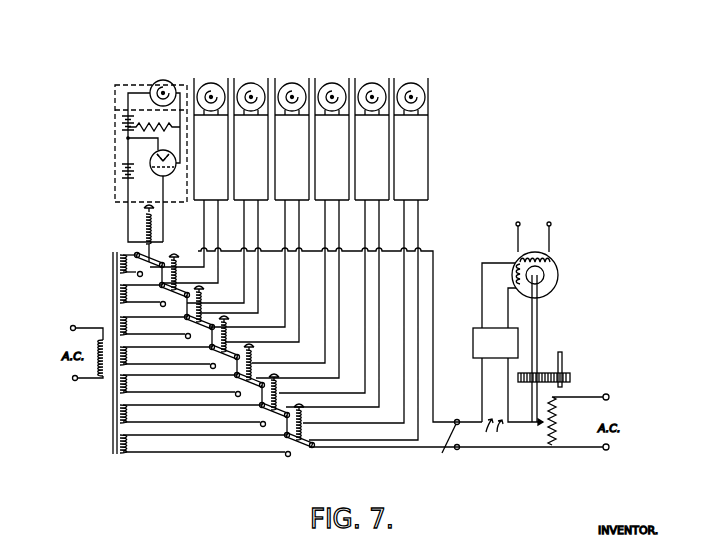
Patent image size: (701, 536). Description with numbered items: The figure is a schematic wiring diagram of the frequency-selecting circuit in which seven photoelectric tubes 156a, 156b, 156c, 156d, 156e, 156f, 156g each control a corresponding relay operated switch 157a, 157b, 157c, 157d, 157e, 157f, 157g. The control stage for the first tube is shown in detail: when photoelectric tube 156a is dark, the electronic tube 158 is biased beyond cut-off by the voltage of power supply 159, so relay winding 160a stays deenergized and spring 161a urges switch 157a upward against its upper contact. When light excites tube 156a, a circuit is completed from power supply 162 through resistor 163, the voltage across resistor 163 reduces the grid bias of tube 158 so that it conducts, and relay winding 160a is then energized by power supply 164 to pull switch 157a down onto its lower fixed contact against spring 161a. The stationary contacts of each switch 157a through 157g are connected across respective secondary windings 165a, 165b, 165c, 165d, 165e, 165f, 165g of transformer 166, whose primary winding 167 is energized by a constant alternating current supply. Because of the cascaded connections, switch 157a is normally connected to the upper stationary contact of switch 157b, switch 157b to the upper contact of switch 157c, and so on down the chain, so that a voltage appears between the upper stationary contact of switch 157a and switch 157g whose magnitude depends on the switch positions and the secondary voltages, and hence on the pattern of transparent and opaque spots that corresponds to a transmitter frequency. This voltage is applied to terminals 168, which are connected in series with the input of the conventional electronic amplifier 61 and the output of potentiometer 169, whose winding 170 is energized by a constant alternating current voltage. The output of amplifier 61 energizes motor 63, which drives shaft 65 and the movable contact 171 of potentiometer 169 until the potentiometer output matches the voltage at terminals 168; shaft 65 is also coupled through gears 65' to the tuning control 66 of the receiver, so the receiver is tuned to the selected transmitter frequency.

The photoelectric tube 156a is at (160, 80).
The photoelectric tube 156b is at (211, 81).
The photoelectric tube 156c is at (258, 70).
The photoelectric tube 156d is at (293, 81).
The photoelectric tube 156e is at (342, 70).
The photoelectric tube 156f is at (373, 81).
The photoelectric tube 156g is at (412, 83).
The relay operated switch 157a is at (148, 260).
The relay operated switch 157b is at (156, 285).
The relay operated switch 157c is at (165, 331).
The relay operated switch 157d is at (192, 360).
The relay operated switch 157e is at (211, 388).
The relay operated switch 157f is at (226, 418).
The relay operated switch 157g is at (255, 448).
The electronic tube 158 is at (155, 172).
The power supply 159 is at (127, 139).
The relay winding 160a is at (152, 238).
The spring 161a is at (145, 209).
The power supply 162 is at (121, 120).
The resistor 163 is at (154, 121).
The power supply 164 is at (121, 172).
The secondary winding 165a is at (138, 274).
The secondary winding 165b is at (121, 293).
The secondary winding 165c is at (121, 322).
The secondary winding 165d is at (121, 360).
The secondary winding 165e is at (121, 386).
The secondary winding 165f is at (120, 413).
The secondary winding 165g is at (120, 445).
The transformer 166 is at (119, 463).
The primary winding 167 is at (70, 329).
The terminals 168 is at (446, 452).
The potentiometer 169 is at (554, 455).
The winding 170 is at (556, 434).
The movable contact 171 is at (548, 427).
The electronic amplifier 61 is at (475, 360).
The motor 63 is at (556, 282).
The shaft 65 is at (552, 348).
The tuning control 66 is at (563, 360).
The gears 65' is at (564, 381).